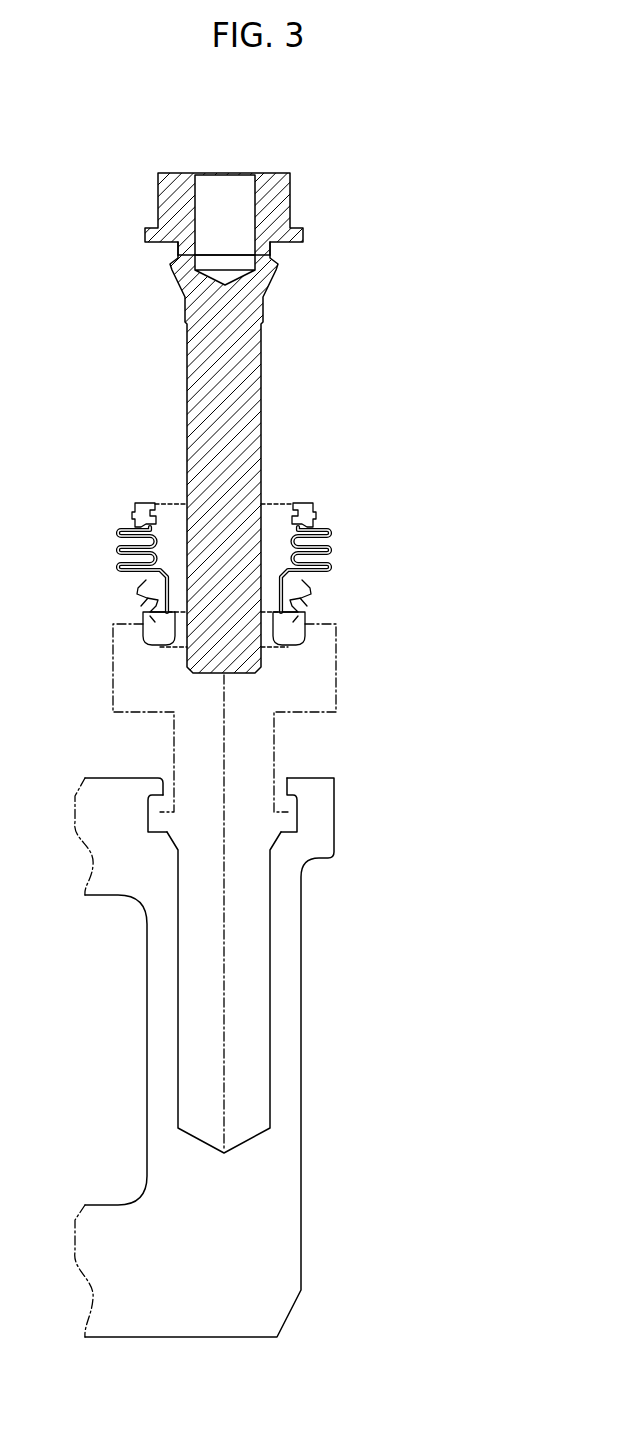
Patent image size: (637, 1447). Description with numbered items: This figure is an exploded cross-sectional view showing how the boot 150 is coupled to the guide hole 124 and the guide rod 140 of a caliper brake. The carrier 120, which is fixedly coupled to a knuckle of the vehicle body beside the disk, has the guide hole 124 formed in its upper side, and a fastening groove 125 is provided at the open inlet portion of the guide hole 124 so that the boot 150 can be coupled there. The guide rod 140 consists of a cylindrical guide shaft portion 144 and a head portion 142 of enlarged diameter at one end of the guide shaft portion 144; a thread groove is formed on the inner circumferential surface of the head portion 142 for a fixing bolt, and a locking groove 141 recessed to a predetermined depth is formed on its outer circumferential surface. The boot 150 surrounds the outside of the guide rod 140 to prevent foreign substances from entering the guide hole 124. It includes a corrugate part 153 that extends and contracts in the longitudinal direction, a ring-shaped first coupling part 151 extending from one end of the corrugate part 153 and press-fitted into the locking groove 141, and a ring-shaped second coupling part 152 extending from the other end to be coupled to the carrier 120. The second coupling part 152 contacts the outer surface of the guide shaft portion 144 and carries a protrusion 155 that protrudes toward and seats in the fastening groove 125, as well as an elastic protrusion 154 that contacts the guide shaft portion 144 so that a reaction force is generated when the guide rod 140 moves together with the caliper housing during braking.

The carrier 120 is at (292, 1222).
The guide hole 124 is at (265, 997).
The fastening groove 125 is at (298, 808).
The guide rod 140 is at (375, 205).
The locking groove 141 is at (176, 250).
The head portion 142 is at (283, 207).
The guide shaft portion 144 is at (263, 331).
The boot 150 is at (378, 528).
The first coupling part 151 is at (305, 513).
The second coupling part 152 is at (315, 617).
The corrugate part 153 is at (333, 548).
The elastic protrusion 154 is at (172, 617).
The protrusion 155 is at (147, 610).